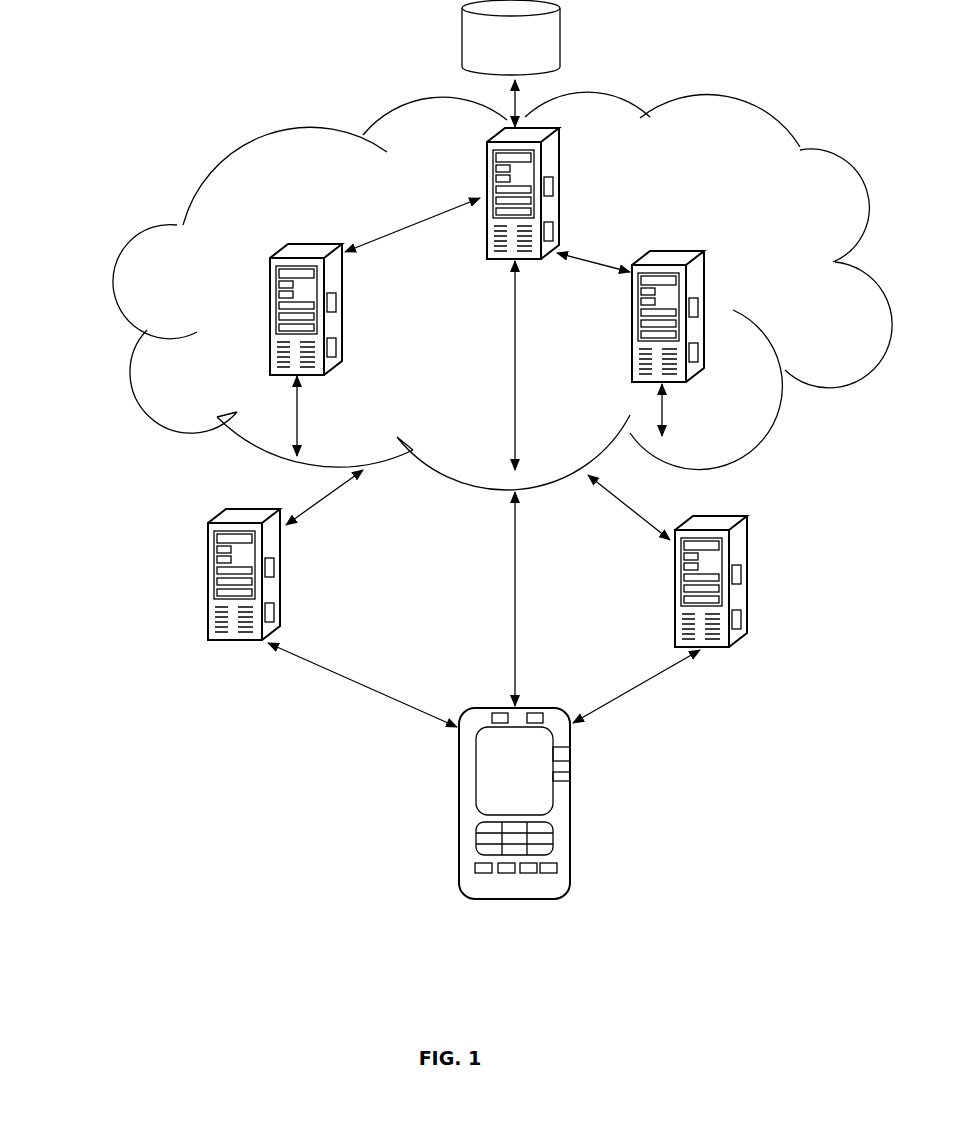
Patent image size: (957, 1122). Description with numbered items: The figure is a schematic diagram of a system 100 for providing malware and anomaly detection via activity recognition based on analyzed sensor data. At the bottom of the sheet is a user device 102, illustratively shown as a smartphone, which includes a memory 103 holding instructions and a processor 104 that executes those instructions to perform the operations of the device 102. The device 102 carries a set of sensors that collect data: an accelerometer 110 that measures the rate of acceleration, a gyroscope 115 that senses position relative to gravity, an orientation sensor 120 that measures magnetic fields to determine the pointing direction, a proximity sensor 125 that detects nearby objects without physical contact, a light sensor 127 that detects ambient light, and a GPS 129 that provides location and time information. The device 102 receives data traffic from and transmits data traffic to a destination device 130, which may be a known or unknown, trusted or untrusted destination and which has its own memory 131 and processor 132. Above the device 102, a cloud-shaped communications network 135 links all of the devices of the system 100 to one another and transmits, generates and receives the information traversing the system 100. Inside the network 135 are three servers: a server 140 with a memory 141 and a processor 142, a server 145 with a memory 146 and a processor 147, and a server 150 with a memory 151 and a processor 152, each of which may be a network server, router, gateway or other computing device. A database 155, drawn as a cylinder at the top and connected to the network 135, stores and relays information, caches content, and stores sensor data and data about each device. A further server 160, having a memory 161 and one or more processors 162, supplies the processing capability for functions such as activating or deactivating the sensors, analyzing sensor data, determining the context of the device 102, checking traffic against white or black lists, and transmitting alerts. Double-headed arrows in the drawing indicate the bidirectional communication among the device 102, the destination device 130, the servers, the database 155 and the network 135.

The system 100 is at (240, 758).
The device 102 is at (459, 787).
The memory 103 is at (483, 873).
The processor 104 is at (506, 873).
The accelerometer 110 is at (528, 873).
The gyroscope 115 is at (552, 873).
The orientation sensor 120 is at (497, 712).
The proximity sensor 125 is at (538, 712).
The light sensor 127 is at (570, 755).
The global positioning system (GPS) 129 is at (570, 778).
The destination device 130 is at (748, 540).
The memory 131 is at (741, 575).
The processor 132 is at (741, 620).
The communications network 135 is at (150, 325).
The server 140 is at (487, 165).
The memory 141 is at (553, 187).
The processor 142 is at (553, 231).
The server 145 is at (270, 280).
The memory 146 is at (336, 302).
The processor 147 is at (336, 347).
The server 150 is at (705, 263).
The memory 151 is at (698, 307).
The processor 152 is at (698, 352).
The database 155 is at (511, 37).
The server 160 is at (208, 567).
The memory 161 is at (274, 613).
The processors 162 is at (274, 568).